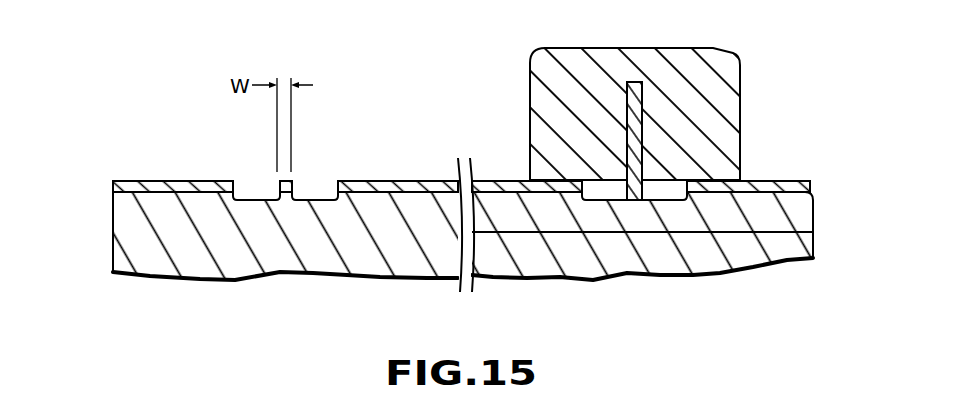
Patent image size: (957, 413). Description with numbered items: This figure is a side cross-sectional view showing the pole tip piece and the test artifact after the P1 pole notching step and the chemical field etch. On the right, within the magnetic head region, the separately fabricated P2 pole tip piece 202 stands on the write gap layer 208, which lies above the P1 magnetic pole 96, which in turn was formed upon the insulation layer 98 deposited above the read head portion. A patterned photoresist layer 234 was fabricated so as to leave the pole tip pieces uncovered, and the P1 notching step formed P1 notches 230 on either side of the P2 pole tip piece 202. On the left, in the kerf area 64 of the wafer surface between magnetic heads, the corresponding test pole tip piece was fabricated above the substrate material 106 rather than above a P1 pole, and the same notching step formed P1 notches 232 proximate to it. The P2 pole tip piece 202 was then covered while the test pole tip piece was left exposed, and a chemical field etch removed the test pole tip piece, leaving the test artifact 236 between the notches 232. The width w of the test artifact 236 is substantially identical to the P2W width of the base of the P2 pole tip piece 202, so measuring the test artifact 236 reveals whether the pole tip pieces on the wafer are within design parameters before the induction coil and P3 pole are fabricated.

The kerf area 64 is at (177, 88).
The P1 magnetic pole 96 is at (816, 212).
The insulation layer 98 is at (816, 249).
The substrate material 106 is at (113, 250).
The P2 pole tip piece 202 is at (632, 81).
The write gap layer 208 is at (112, 186).
The P1 notches 230 is at (596, 174).
The P1 notches 232 is at (244, 176).
The patterned photoresist layer 234 is at (742, 86).
The test artifact 236 is at (279, 183).